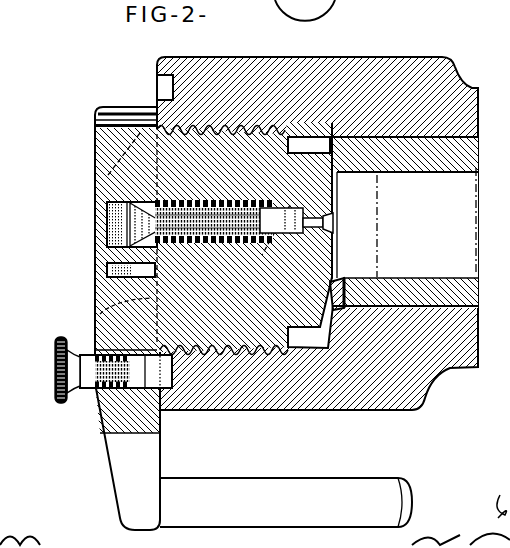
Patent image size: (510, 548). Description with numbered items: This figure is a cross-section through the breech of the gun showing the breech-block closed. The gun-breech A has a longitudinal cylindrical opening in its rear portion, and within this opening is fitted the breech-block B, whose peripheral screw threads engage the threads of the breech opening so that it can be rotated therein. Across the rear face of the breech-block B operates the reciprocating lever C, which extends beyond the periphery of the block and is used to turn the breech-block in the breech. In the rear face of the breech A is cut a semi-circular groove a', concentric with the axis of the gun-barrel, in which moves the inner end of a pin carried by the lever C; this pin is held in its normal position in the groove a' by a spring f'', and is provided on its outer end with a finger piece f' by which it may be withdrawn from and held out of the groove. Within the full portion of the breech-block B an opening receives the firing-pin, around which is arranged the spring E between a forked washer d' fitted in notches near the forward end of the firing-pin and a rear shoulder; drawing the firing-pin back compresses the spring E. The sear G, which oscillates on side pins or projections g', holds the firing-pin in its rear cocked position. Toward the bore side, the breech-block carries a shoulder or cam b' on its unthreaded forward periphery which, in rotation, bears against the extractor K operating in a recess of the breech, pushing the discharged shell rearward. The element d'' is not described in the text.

The gun-breech A is at (380, 63).
The semi-circular groove a' is at (152, 86).
The breech-block B is at (193, 318).
The extractor K is at (383, 222).
The shoulder or cam b' is at (351, 269).
The spring E is at (309, 146).
The sear G is at (95, 168).
The forked washer d' is at (240, 214).
The pin stop block d'' is at (104, 276).
The pins or projections g' is at (102, 311).
The finger piece f' is at (94, 374).
The spring f'' is at (91, 398).
The reciprocating lever C is at (286, 502).